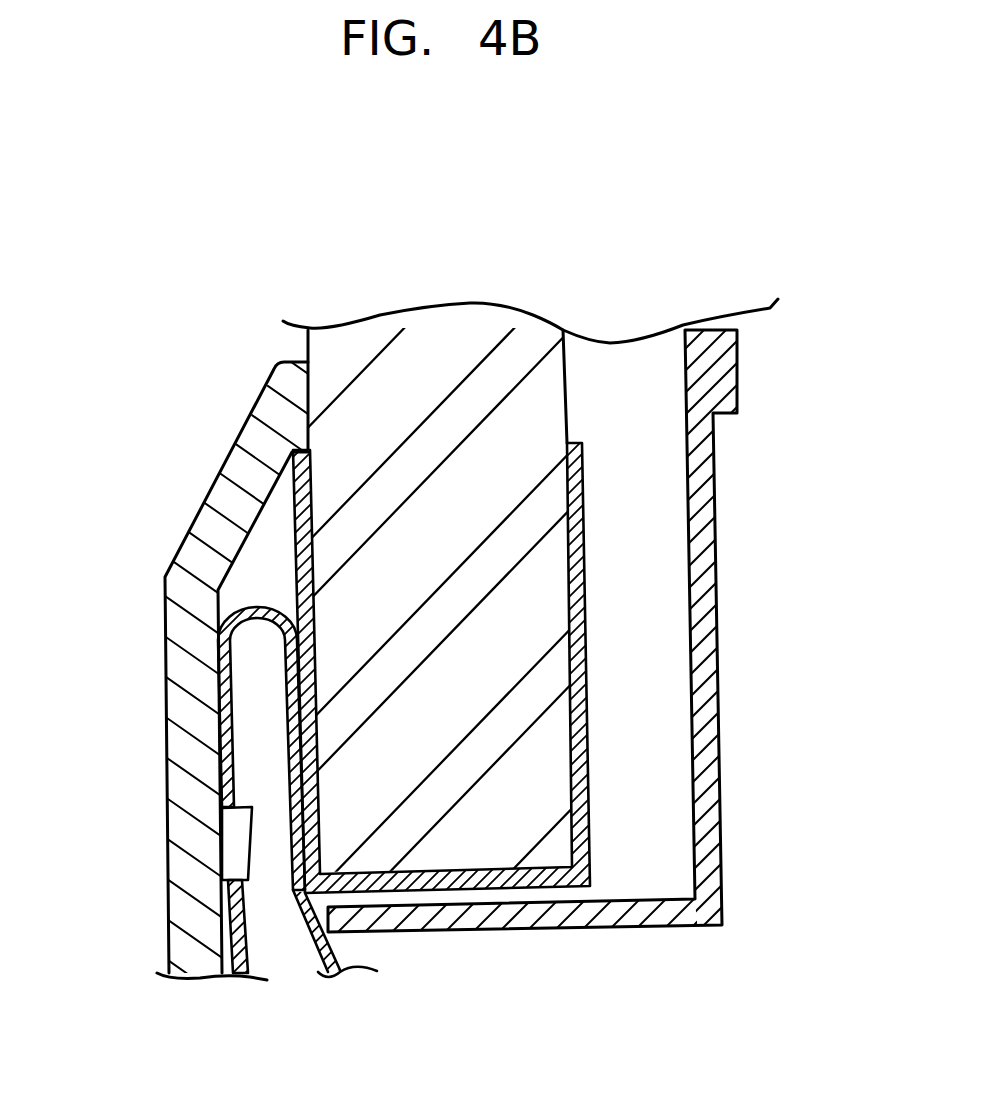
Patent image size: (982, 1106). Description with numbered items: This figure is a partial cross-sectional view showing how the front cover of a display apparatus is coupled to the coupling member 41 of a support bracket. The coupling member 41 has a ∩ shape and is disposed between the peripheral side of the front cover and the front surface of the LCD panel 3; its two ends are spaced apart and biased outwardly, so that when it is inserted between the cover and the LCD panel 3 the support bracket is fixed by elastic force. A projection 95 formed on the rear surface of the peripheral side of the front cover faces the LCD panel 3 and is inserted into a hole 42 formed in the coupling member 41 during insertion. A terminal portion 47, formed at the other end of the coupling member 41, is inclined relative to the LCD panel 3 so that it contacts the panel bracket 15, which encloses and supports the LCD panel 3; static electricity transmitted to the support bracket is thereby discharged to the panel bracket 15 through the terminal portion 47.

The LCD panel 3 is at (468, 320).
The panel bracket 15 is at (712, 617).
The coupling member 41 is at (287, 707).
The hole 42 is at (224, 813).
The terminal portion 47 is at (302, 928).
The projection 95 is at (232, 859).